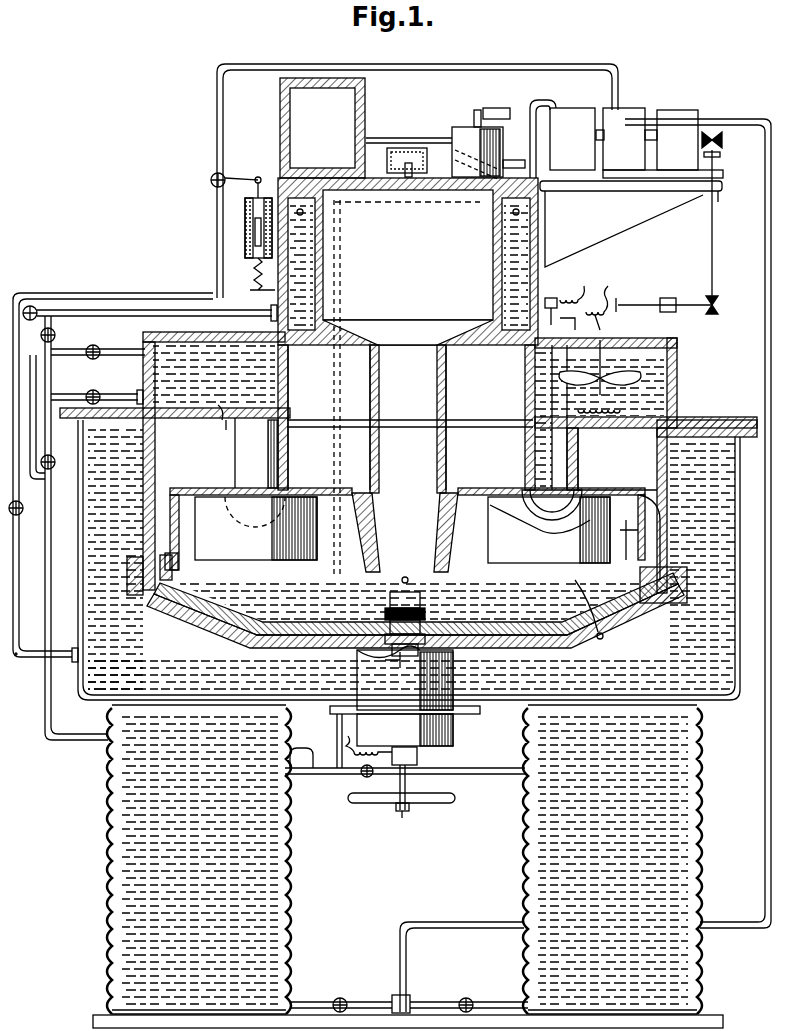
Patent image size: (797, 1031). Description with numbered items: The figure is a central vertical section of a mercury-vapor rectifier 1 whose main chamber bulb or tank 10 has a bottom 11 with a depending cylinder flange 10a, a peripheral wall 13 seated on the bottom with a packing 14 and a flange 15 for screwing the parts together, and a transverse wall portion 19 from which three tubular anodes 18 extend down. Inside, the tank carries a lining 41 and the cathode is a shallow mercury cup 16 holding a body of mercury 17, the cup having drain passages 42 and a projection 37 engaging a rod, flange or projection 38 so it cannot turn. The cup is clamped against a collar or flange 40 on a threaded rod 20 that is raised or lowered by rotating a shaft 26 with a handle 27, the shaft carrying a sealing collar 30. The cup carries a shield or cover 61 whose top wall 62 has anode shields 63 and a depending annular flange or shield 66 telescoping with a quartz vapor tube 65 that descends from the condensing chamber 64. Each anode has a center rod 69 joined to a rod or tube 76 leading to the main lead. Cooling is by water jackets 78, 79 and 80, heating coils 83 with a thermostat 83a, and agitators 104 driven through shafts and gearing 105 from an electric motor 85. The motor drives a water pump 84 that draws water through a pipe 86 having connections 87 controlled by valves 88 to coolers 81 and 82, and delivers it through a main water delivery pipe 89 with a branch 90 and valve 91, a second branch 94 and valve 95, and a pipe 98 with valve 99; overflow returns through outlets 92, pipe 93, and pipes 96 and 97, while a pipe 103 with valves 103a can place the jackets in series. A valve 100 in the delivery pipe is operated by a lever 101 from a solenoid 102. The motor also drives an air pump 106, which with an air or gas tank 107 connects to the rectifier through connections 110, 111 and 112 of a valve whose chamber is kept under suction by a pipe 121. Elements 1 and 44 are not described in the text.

The outer tank 1 is at (738, 615).
The main chamber bulb or tank 10 is at (617, 459).
The depending cylinder flange 10a is at (453, 728).
The bottom 11 is at (574, 578).
The peripheral wall 13 is at (656, 460).
The packing 14 is at (172, 556).
The flange 15 is at (179, 535).
The mercury cup 16 is at (215, 606).
The body of mercury 17 is at (470, 574).
The anodes 18 is at (377, 417).
The transverse wall portion 19 is at (210, 458).
The threaded rod 20 is at (405, 678).
The shaft 26 is at (408, 782).
The handle 27 is at (432, 803).
The collar 30 is at (398, 600).
The projection 37 is at (640, 535).
The rod, flange or projection 38 is at (646, 498).
The collar or flange 40 is at (392, 645).
The lining 41 is at (157, 470).
The drain passages 42 is at (180, 563).
The block 44 is at (143, 578).
The shield or cover 61 is at (175, 490).
The top wall 62 is at (458, 492).
The depending cylindrical tubes or sleeves 63 is at (402, 530).
The condensing chamber 64 is at (408, 376).
The vapor tube 65 is at (434, 396).
The depending annular flange or shield 66 is at (446, 530).
The center rod 69 is at (540, 520).
The rod or tube 76 is at (526, 414).
The water jacket 78 is at (524, 236).
The water jacket 79 is at (677, 358).
The water jacket 80 is at (758, 714).
The water cooler or condenser 81 is at (106, 896).
The water cooler or condenser 82 is at (702, 850).
The heating coils 83 is at (413, 425).
The thermostat 83a is at (592, 300).
The water pump 84 is at (628, 112).
The electric motor 85 is at (680, 112).
The pipe 86 is at (764, 404).
The connections 87 is at (390, 1002).
The valves 88 is at (340, 998).
The main water delivery pipe 89 is at (446, 64).
The branch 90 is at (232, 310).
The valve 91 is at (32, 305).
The outlets 92 is at (554, 203).
The pipe 93 is at (340, 740).
The second branch 94 is at (120, 400).
The valve 95 is at (93, 391).
The pipe 96 is at (128, 345).
The pipe 97 is at (45, 732).
The pipe 98 is at (14, 654).
The valve 99 is at (19, 511).
The valve 100 is at (211, 180).
The lever 101 is at (233, 172).
The solenoid 102 is at (244, 232).
The pipe 103 is at (48, 370).
The valves 103a is at (55, 335).
The paddle wheels or agitators 104 is at (676, 384).
The shafts and gearing 105 is at (716, 150).
The air pump 106 is at (577, 139).
The air or gas tank 107 is at (322, 128).
The connection 110 is at (458, 150).
The connection 111 is at (510, 160).
The connection 112 is at (408, 138).
The pipe 121 is at (537, 165).